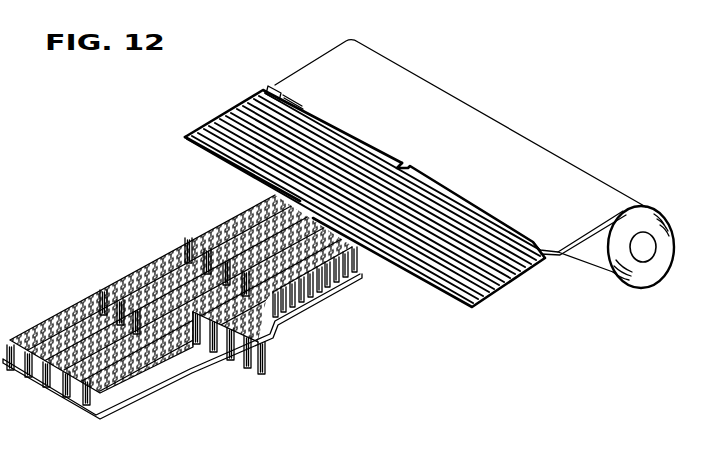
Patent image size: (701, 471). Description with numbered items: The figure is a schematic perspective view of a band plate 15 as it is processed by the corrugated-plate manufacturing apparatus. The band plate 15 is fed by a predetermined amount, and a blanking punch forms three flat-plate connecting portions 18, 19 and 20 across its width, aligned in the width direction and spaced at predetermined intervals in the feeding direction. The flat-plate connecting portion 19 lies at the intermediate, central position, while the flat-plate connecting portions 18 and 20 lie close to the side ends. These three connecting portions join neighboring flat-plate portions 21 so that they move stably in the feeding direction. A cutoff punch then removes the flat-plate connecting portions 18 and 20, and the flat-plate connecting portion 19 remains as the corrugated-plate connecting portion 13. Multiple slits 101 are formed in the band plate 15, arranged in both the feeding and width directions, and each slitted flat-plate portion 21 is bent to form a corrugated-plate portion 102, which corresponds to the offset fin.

The corrugated-plate connecting portion 13 is at (199, 297).
The band plate 15 is at (495, 127).
The flat-plate connecting portion 18 is at (279, 83).
The flat-plate connecting portion 19 is at (401, 163).
The flat-plate connecting portion 20 is at (540, 242).
The flat-plate portion 21 is at (340, 199).
The slit 101 is at (210, 128).
The corrugated-plate portion 102 is at (235, 218).